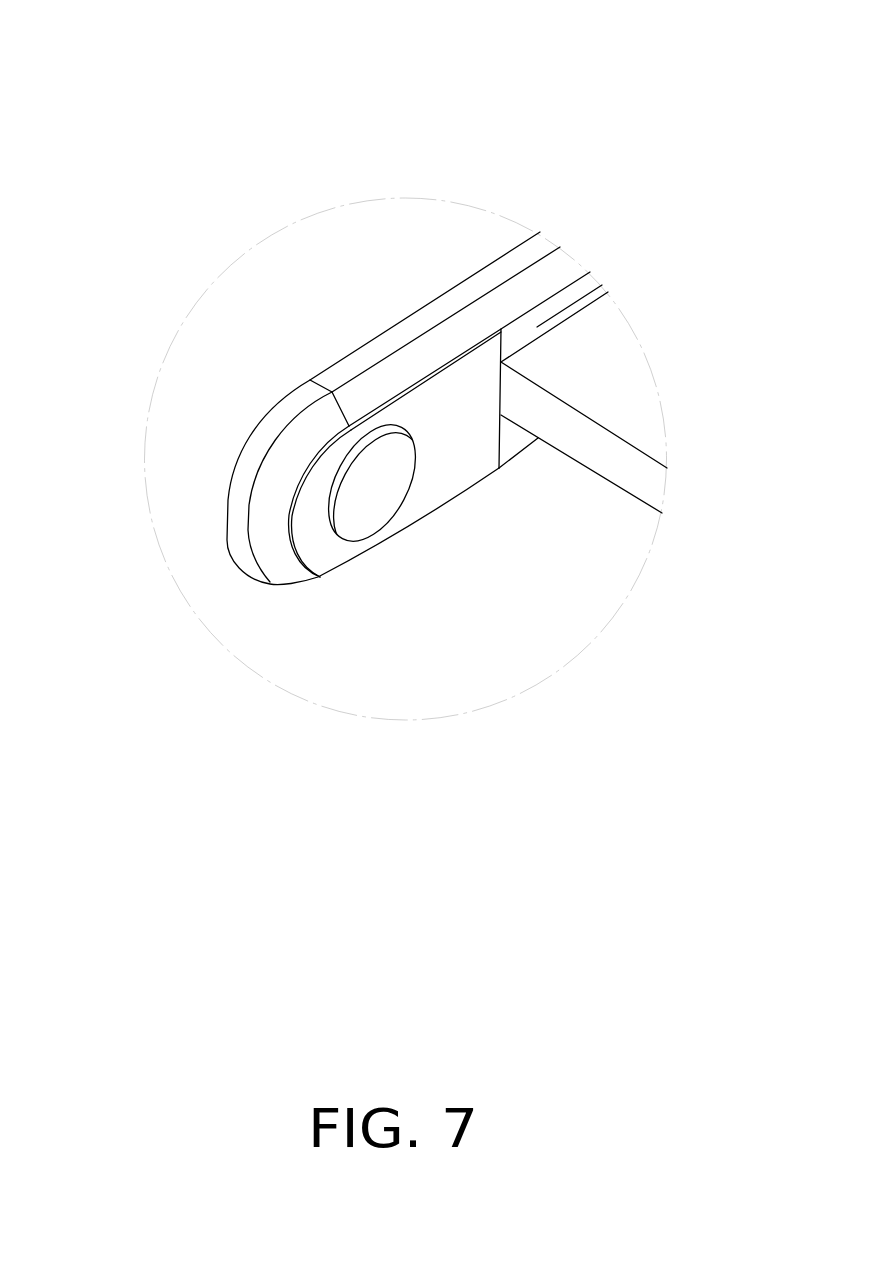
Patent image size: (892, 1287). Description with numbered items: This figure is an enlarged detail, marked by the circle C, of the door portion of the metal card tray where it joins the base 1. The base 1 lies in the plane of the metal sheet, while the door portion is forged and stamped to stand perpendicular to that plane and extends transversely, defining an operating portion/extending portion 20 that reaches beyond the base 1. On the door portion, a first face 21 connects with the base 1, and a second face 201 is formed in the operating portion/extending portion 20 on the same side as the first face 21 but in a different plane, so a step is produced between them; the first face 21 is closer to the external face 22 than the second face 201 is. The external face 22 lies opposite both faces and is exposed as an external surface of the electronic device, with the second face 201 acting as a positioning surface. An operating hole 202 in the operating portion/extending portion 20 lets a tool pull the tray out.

The base 1 is at (572, 371).
The operating portion/extending portion 20 is at (365, 352).
The second face 201 is at (460, 405).
The operating hole 202 is at (368, 500).
The first face 21 is at (602, 285).
The external face 22 is at (273, 406).
The enlarged detail circle C is at (287, 223).